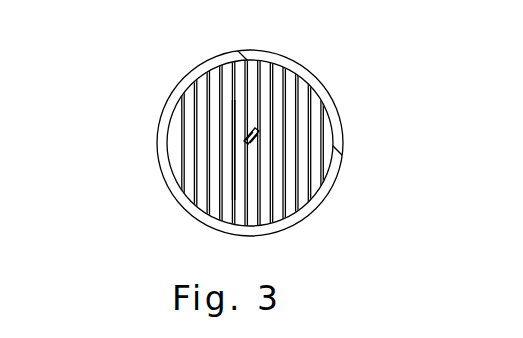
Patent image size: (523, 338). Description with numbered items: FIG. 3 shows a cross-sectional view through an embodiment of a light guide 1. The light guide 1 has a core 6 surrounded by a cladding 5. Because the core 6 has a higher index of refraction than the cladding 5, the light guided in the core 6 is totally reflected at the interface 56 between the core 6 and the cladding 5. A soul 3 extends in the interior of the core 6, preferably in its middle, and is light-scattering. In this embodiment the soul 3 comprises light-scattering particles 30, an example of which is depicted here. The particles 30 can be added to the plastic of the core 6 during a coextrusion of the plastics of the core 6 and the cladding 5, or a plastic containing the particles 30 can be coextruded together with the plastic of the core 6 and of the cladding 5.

The light guide 1 is at (151, 91).
The soul 3 is at (226, 154).
The cladding 5 is at (335, 96).
The core 6 is at (318, 156).
The particles 30 is at (263, 127).
The interface 56 is at (318, 207).